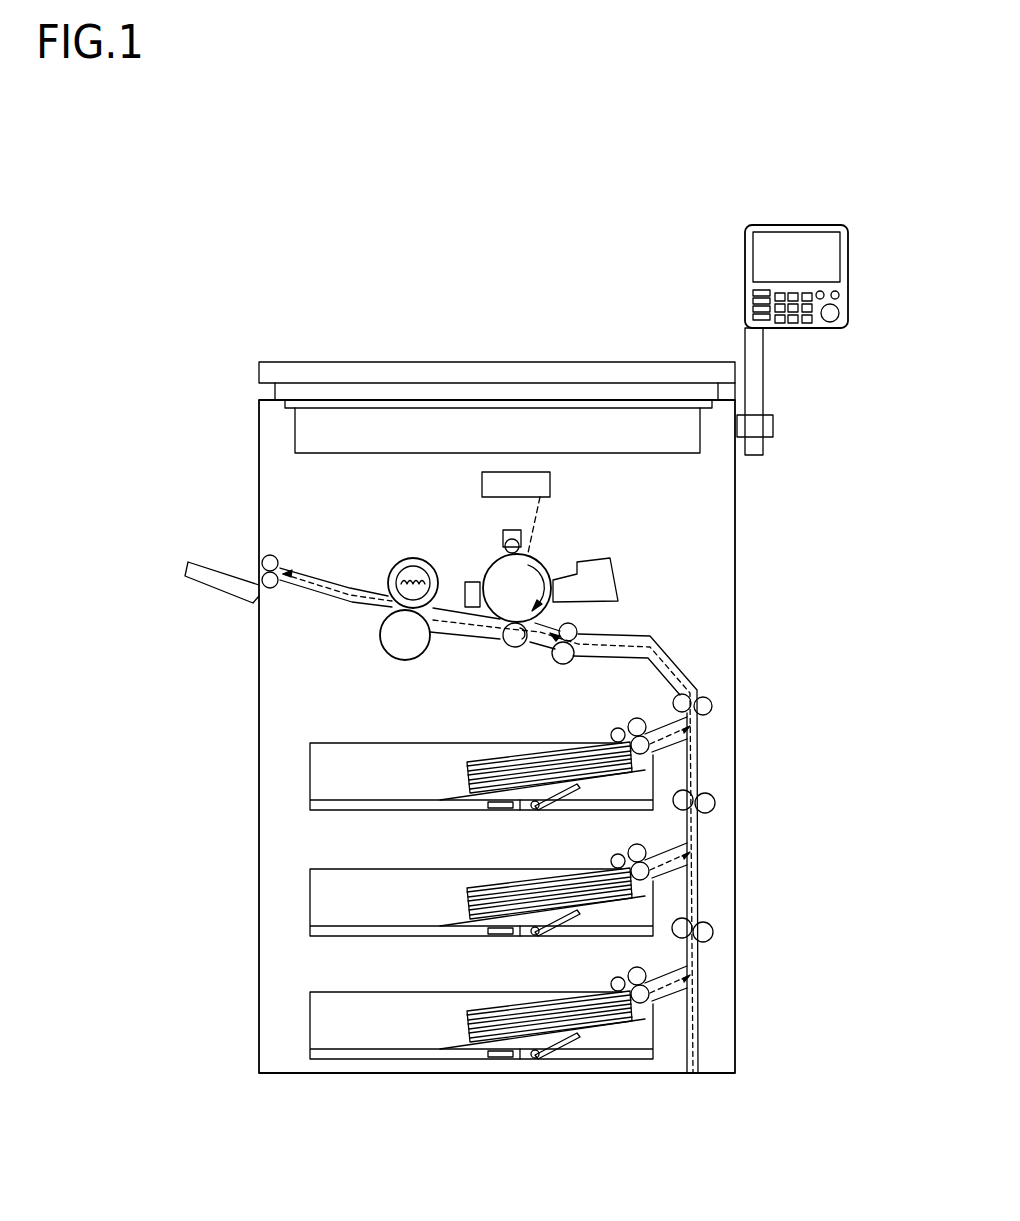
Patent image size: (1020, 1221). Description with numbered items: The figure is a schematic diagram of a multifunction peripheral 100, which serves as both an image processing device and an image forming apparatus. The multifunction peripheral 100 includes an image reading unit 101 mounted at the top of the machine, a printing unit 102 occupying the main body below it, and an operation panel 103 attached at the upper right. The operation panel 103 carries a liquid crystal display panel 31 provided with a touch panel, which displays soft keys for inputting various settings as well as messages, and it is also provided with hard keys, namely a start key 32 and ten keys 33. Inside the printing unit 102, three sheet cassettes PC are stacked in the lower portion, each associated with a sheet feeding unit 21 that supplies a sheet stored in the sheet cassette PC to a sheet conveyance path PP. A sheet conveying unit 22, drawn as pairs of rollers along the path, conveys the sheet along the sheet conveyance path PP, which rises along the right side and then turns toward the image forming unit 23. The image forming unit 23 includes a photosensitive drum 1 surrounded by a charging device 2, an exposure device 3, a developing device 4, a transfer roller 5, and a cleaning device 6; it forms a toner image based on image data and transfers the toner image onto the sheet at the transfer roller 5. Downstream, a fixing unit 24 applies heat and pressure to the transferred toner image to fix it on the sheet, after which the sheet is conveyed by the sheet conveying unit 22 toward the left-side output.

The multifunction peripheral 100 is at (270, 350).
The image reading unit 101 is at (702, 447).
The printing unit 102 is at (703, 590).
The operation panel 103 is at (745, 228).
The liquid crystal display panel 31 is at (787, 240).
The start key 32 is at (829, 322).
The ten keys 33 is at (790, 322).
The photosensitive drum 1 is at (500, 568).
The charging device 2 is at (503, 531).
The exposure device 3 is at (490, 487).
The developing device 4 is at (603, 572).
The transfer roller 5 is at (510, 641).
The cleaning device 6 is at (467, 584).
The image forming unit 23 is at (539, 566).
The fixing unit 24 is at (373, 630).
The sheet feeding unit 21 is at (603, 735).
The sheet conveying unit 22 is at (277, 551).
The sheet cassette PC is at (340, 743).
The sheet conveyance path PP is at (676, 662).